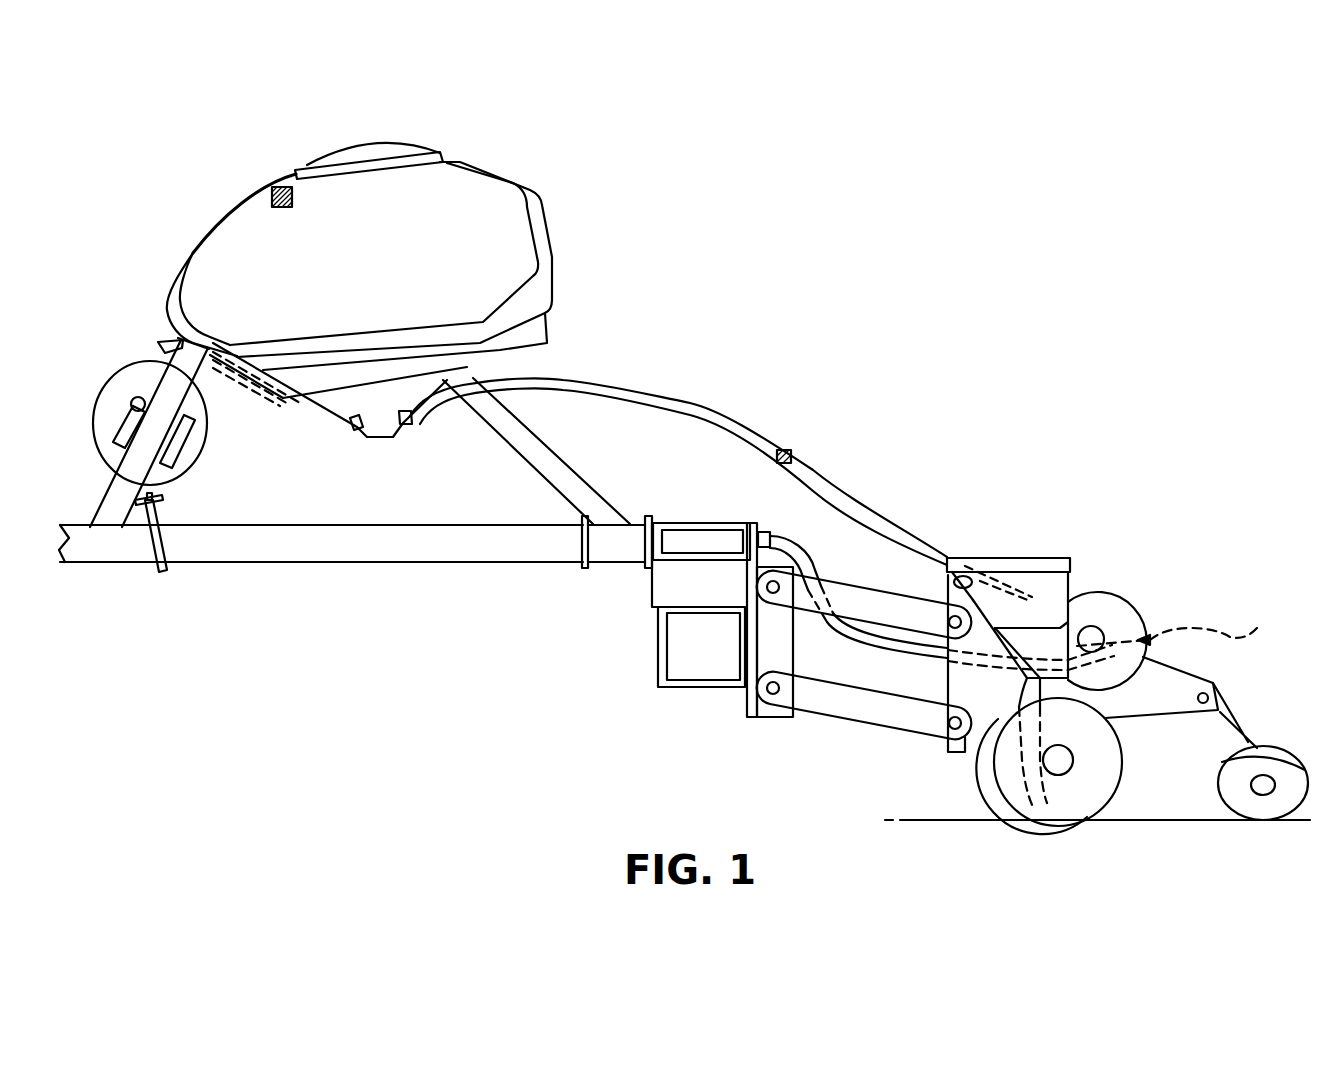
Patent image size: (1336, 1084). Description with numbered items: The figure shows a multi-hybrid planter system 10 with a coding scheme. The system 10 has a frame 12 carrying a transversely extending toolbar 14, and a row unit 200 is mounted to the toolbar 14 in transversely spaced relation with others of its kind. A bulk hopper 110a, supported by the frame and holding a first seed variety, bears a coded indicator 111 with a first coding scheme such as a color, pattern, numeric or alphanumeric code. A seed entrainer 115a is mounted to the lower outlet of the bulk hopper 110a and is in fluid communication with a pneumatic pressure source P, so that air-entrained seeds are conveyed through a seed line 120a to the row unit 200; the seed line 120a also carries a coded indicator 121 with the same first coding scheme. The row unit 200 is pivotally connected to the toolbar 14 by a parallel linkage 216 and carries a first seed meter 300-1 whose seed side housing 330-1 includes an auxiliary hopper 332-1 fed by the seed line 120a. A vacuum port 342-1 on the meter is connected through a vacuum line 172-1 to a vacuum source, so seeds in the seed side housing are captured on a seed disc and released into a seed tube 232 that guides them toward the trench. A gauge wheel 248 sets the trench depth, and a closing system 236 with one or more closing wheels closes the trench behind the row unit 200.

The system 10 is at (722, 285).
The frame 12 is at (446, 566).
The toolbar 14 is at (657, 647).
The pneumatic pressure source P is at (117, 398).
The bulk hopper 110a is at (385, 270).
The coded indicator 111 is at (278, 186).
The seed entrainer 115a is at (416, 439).
The seed line 120a is at (683, 393).
The coded indicator 121 is at (792, 449).
The vacuum line 172-1 is at (800, 556).
The row unit 200 is at (1283, 500).
The parallel linkage 216 is at (857, 745).
The seed tube 232 is at (1027, 683).
The closing system 236 is at (1268, 763).
The gauge wheel 248 is at (1006, 773).
The first seed meter 300-1 is at (1105, 564).
The seed side housing 330-1 is at (1134, 600).
The auxiliary hopper 332-1 is at (1033, 580).
The vacuum port 342-1 is at (1191, 626).